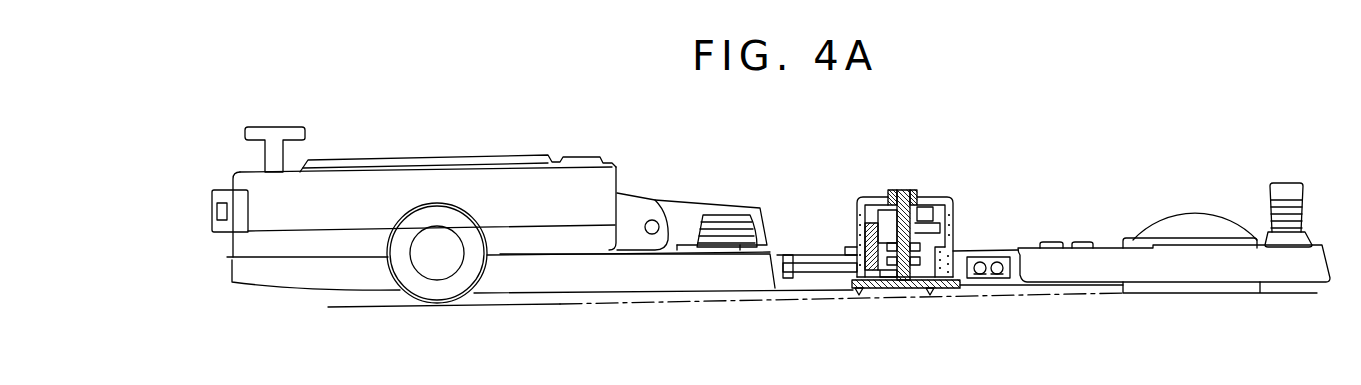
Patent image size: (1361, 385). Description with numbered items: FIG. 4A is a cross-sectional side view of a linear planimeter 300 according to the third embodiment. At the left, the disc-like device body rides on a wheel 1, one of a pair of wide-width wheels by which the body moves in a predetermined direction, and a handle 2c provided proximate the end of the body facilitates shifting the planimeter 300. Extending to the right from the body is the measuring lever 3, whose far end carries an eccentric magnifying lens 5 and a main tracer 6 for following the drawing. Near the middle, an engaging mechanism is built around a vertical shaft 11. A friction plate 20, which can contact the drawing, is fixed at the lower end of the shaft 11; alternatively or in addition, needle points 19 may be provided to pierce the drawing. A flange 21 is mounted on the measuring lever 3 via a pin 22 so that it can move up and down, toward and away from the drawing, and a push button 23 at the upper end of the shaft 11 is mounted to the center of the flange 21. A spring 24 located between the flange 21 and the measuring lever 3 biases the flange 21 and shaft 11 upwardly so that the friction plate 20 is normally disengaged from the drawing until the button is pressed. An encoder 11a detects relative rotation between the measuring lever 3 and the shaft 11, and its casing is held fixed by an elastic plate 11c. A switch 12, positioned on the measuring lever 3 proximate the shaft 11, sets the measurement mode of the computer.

The planimeter 300 is at (1065, 158).
The handle 2c is at (290, 133).
The wheel 1 is at (413, 287).
The elastic plate 11c is at (818, 258).
The encoder 11a is at (888, 228).
The pin 22 is at (870, 197).
The flange 21 is at (892, 198).
The shaft 11 is at (903, 198).
The push button 23 is at (917, 197).
The spring 24 is at (950, 226).
The needle points 19 is at (855, 293).
The friction plate 20 is at (878, 293).
The switch 12 is at (985, 280).
The measuring lever 3 is at (1095, 257).
The eccentric magnifying lens 5 is at (1182, 222).
The main tracer 6 is at (1217, 288).